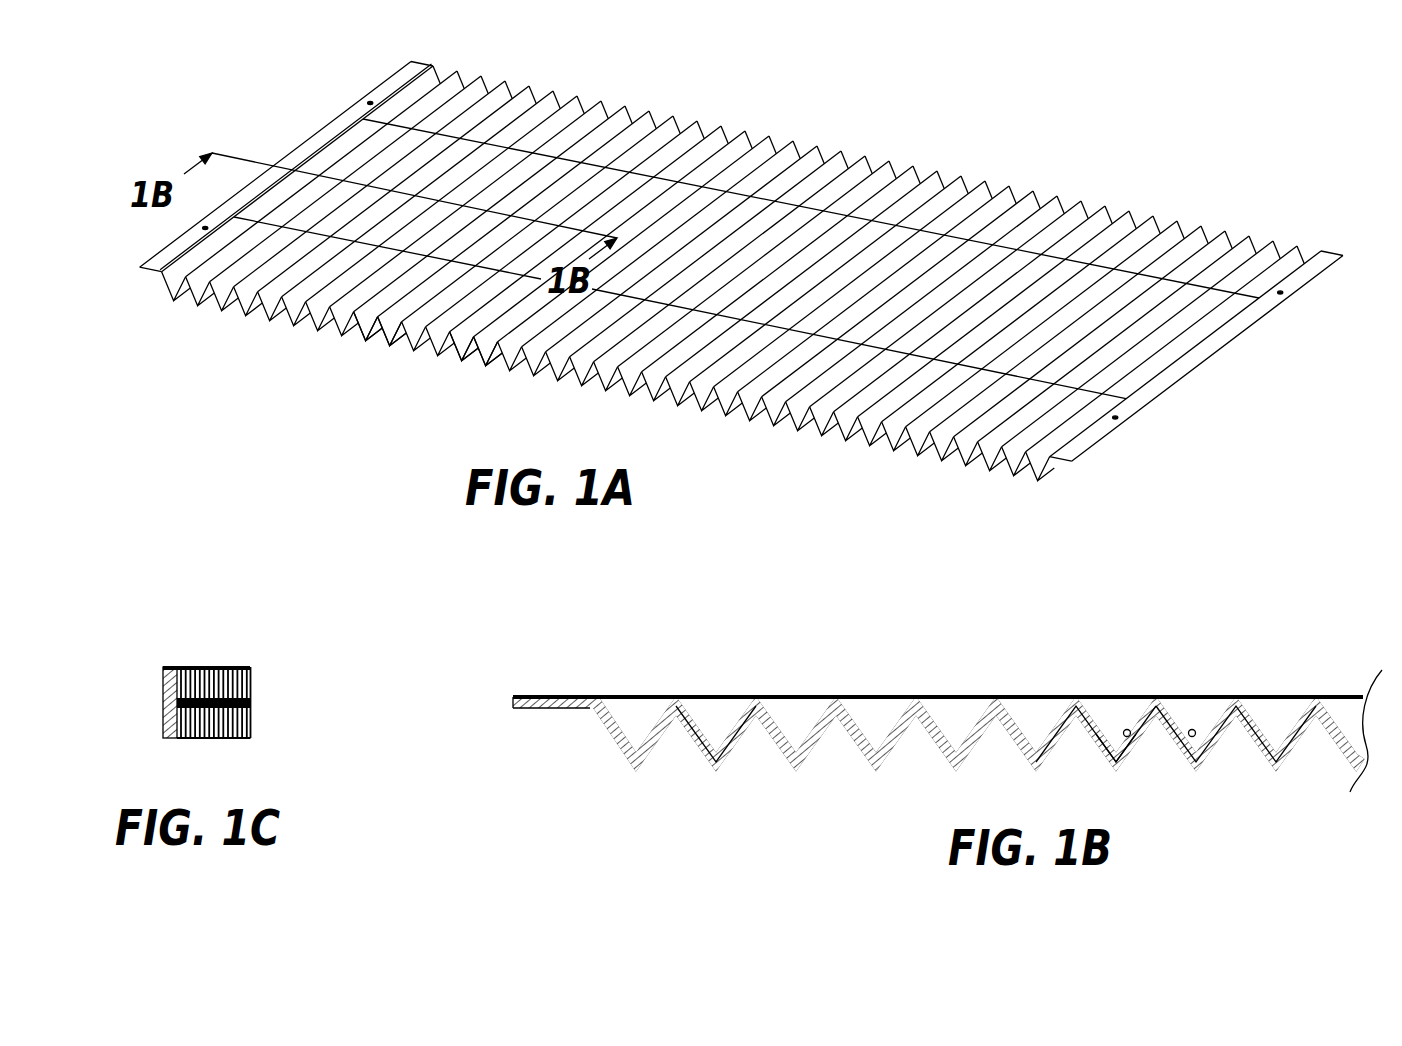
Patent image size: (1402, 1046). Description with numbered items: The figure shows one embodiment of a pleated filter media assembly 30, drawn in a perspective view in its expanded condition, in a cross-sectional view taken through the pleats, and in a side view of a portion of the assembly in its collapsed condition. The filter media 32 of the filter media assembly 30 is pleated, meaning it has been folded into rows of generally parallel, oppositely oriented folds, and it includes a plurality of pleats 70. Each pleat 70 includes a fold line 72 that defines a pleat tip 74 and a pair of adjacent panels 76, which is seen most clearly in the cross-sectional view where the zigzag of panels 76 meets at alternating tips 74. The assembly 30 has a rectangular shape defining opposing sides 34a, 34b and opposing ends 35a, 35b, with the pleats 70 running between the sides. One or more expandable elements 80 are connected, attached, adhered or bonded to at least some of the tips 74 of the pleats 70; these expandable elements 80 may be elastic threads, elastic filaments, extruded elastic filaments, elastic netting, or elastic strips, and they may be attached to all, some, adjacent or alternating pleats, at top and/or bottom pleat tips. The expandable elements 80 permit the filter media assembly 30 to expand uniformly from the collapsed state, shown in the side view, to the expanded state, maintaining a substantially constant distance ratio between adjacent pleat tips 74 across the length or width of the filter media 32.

In FIG. 1A, the filter media assembly 30 is at (741, 271).
In FIG. 1B, the filter media assembly 30 is at (922, 714).
In FIG. 1C, the filter media assembly 30 is at (181, 685).
In FIG. 1A, the filter media 32 is at (1087, 230).
In FIG. 1B, the filter media 32 is at (922, 719).
In FIG. 1C, the filter media 32 is at (230, 738).
In FIG. 1A, the side 34a is at (733, 130).
In FIG. 1A, the side 34b is at (693, 396).
In FIG. 1A, the end 35a is at (320, 138).
In FIG. 1B, the end 35a is at (513, 705).
In FIG. 1C, the end 35a is at (165, 708).
In FIG. 1A, the end 35b is at (1210, 350).
In FIG. 1A, the pleat 70 is at (402, 337).
In FIG. 1B, the pleat 70 is at (773, 738).
In FIG. 1C, the pleat 70 is at (190, 736).
In FIG. 1B, the fold line 72 is at (1130, 730).
In FIG. 1A, the pleat tip 74 is at (498, 343).
In FIG. 1B, the pleat tip 74 is at (1317, 697).
In FIG. 1B, the panel 76 is at (1122, 753).
In FIG. 1A, the expandable element 80 is at (1223, 291).
In FIG. 1B, the expandable element 80 is at (640, 697).
In FIG. 1C, the expandable element 80 is at (180, 667).